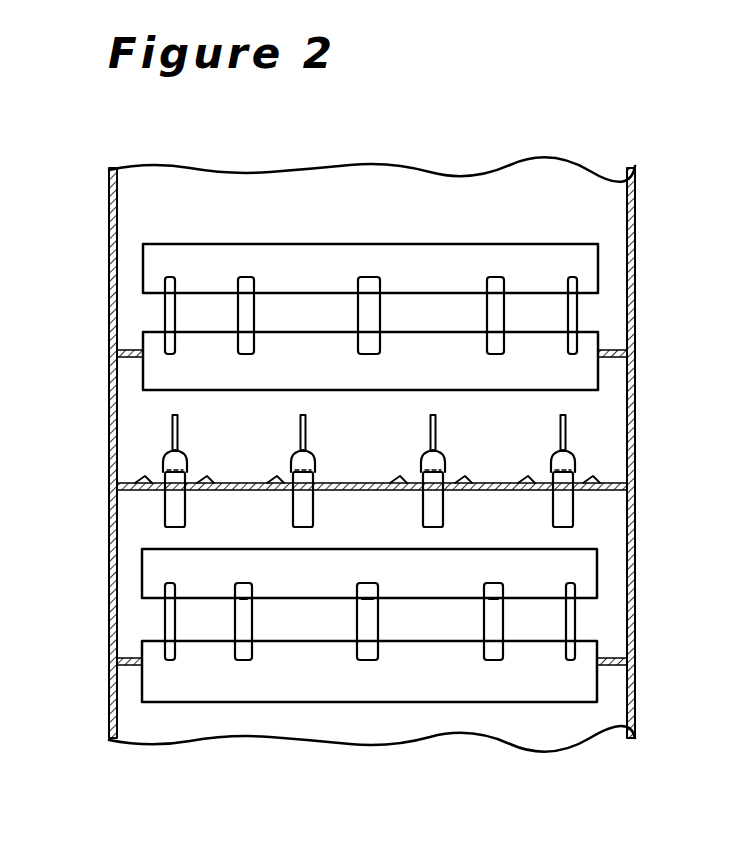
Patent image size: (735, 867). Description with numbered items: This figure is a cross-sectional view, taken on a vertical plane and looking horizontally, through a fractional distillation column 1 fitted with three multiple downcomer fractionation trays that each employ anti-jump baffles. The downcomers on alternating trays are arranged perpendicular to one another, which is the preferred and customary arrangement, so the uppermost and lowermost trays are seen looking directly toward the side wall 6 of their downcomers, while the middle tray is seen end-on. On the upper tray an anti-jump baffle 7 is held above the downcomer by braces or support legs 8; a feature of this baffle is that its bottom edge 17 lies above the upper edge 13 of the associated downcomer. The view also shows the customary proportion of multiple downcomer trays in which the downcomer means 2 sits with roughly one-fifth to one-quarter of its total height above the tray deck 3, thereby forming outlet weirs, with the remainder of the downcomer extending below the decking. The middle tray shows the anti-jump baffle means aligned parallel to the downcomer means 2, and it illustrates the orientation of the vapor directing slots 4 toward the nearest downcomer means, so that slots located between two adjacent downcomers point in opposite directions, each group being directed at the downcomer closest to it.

The fractionation column 1 is at (640, 209).
The downcomer means 2 is at (143, 365).
The deck 3 is at (612, 357).
The vapor directing slots 4 is at (402, 481).
The side wall 6 is at (522, 392).
The anti-jump baffle 7 is at (388, 243).
The support legs 8 is at (364, 285).
The upper edge 13 is at (160, 332).
The bottom edge 17 is at (585, 295).